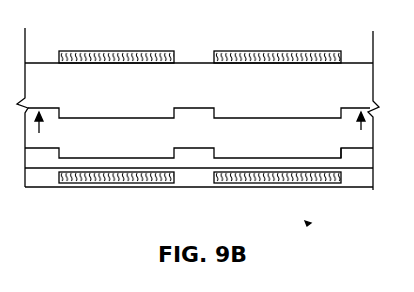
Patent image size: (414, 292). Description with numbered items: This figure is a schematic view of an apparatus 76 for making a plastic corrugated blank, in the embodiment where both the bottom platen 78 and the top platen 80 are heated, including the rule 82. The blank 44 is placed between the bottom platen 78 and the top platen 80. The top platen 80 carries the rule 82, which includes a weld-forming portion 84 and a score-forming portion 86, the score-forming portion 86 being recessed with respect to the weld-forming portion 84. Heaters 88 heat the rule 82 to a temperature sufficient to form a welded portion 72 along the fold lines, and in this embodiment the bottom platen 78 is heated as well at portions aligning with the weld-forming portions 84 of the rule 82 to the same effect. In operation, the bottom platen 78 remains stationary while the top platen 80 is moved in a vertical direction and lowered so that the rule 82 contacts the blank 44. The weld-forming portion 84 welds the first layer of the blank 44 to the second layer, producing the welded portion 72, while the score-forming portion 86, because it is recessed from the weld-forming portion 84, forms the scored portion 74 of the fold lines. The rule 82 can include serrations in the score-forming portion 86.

The top platen 80 is at (361, 94).
The rule 82 is at (235, 85).
The weld-forming portion 84 is at (122, 118).
The heater 88 is at (275, 50).
The welded portion 72 is at (257, 157).
The scored portion 74 is at (39, 161).
The bottom platen 78 is at (350, 178).
The score-forming portion 86 is at (195, 130).
The blank 44 is at (365, 151).
The apparatus 76 is at (307, 226).